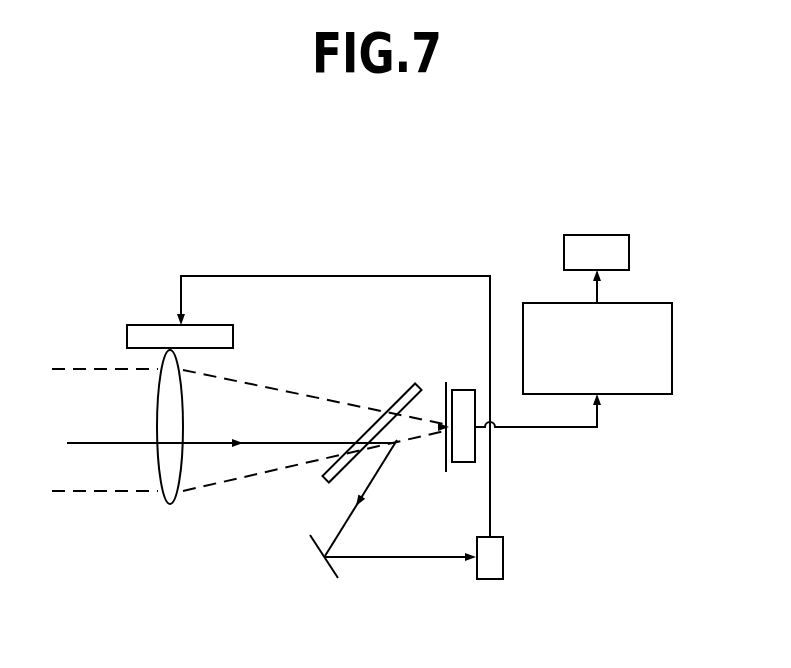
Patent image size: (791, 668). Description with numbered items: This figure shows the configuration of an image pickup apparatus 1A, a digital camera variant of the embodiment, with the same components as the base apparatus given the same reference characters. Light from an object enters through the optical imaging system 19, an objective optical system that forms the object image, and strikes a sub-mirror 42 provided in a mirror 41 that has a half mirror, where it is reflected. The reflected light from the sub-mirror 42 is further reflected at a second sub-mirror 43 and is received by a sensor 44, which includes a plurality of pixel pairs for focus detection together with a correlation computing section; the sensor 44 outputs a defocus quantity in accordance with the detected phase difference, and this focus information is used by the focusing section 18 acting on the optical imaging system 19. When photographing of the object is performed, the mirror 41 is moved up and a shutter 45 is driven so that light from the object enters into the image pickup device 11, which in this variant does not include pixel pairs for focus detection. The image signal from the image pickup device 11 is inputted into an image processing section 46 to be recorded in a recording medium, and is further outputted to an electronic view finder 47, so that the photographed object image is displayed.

The image pickup apparatus 1A is at (183, 222).
The focusing section 18 is at (136, 325).
The optical imaging system 19 is at (163, 500).
The mirror 41 is at (396, 385).
The sub-mirror 42 is at (400, 450).
The sub-mirror 43 is at (326, 569).
The sensor 44 is at (504, 556).
The image pickup device 11 is at (458, 390).
The shutter 45 is at (444, 375).
The image processing section 46 is at (631, 395).
The electronic view finder 47 is at (630, 250).